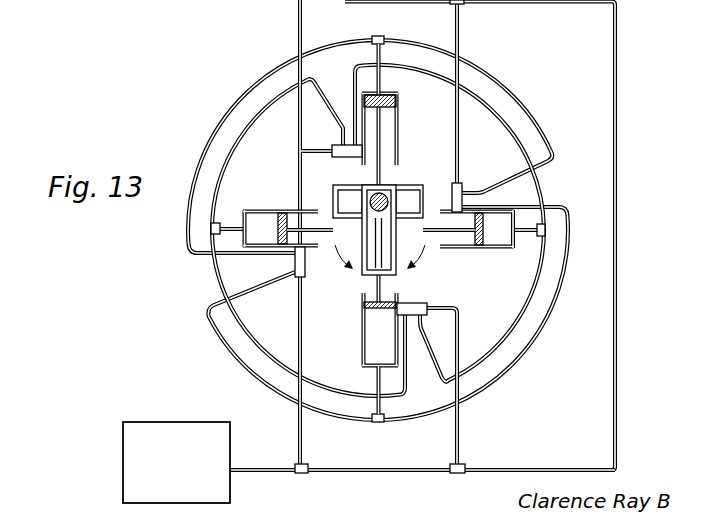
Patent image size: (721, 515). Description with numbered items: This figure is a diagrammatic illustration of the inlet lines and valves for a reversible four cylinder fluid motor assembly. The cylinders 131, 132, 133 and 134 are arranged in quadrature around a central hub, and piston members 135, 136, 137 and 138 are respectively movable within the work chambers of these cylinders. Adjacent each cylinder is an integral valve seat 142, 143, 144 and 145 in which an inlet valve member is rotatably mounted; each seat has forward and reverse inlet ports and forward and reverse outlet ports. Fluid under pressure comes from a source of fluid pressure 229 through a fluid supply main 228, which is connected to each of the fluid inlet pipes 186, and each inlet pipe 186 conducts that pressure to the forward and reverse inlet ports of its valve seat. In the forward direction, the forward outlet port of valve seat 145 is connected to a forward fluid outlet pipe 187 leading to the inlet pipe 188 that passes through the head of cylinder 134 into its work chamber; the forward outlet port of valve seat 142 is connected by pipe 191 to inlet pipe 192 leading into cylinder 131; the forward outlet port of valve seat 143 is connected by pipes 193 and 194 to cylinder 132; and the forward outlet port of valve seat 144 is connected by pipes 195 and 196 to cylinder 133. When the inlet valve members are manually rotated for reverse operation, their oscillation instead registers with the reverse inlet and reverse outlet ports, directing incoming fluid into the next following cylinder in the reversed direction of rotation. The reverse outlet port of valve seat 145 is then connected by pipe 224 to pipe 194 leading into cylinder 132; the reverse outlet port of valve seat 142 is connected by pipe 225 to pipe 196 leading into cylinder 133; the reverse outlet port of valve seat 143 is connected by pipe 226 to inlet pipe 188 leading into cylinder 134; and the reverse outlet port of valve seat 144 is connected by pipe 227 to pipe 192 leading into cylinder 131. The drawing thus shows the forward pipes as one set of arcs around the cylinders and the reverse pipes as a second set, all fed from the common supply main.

The cylinder 131 is at (397, 122).
The cylinder 132 is at (505, 248).
The cylinder 133 is at (363, 346).
The cylinder 134 is at (263, 210).
The piston member 135 is at (396, 96).
The piston member 136 is at (478, 246).
The piston member 137 is at (363, 305).
The piston member 138 is at (284, 212).
The valve seat 142 is at (458, 182).
The valve seat 143 is at (428, 306).
The valve seat 144 is at (297, 278).
The valve seat 145 is at (334, 157).
The fluid inlet pipe 186 is at (301, 152).
The forward fluid outlet pipe 187 is at (270, 97).
The inlet pipe 188 is at (214, 236).
The pipe 191 is at (507, 86).
The inlet pipe 192 is at (367, 57).
The pipe 193 is at (499, 345).
The pipe 194 is at (541, 203).
The pipe 195 is at (256, 381).
The pipe 196 is at (375, 422).
The pipe 224 is at (514, 128).
The pipe 225 is at (558, 312).
The pipe 226 is at (317, 385).
The pipe 227 is at (211, 137).
The fluid supply main 228 is at (362, 472).
The source of fluid pressure 229 is at (178, 420).